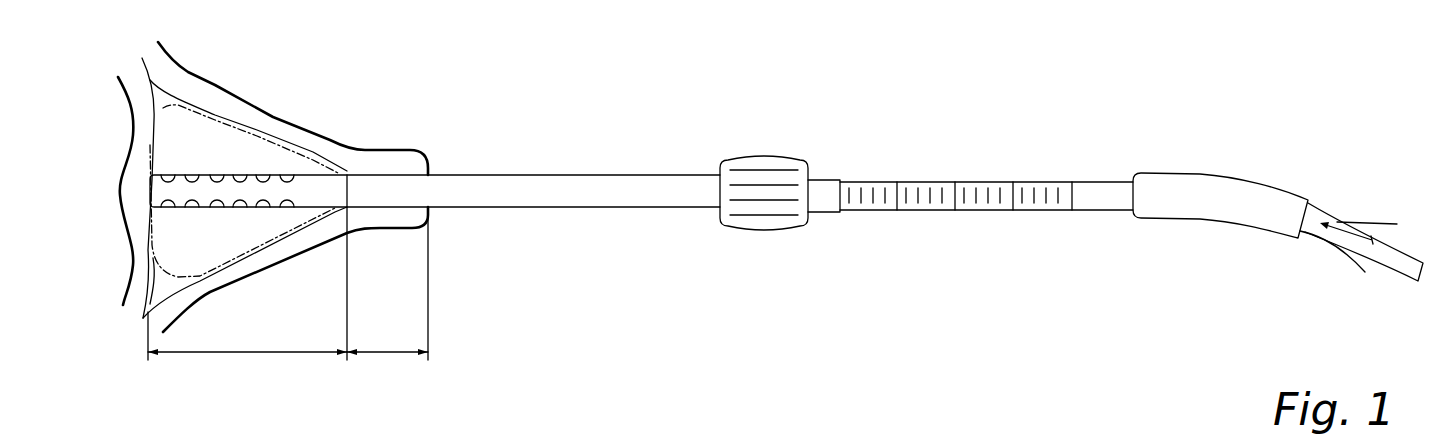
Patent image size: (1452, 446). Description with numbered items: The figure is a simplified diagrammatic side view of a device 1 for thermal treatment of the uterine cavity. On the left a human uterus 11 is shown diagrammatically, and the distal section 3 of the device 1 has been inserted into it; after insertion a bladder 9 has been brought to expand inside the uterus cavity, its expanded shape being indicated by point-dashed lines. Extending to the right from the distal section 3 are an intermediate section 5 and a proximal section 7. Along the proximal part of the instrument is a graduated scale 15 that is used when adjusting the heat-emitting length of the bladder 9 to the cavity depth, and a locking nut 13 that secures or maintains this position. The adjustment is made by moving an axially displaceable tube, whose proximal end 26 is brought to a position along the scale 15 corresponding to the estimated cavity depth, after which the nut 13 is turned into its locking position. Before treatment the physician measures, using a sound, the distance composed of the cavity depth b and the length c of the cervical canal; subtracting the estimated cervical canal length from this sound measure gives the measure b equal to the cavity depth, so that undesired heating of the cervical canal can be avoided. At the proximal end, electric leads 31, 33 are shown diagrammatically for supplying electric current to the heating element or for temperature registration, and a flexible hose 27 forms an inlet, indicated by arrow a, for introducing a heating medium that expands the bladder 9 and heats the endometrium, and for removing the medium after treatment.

The device 1 is at (750, 105).
The distal section 3 is at (233, 188).
The intermediate section 5 is at (633, 190).
The proximal section 7 is at (1223, 178).
The bladder 9 is at (256, 135).
The human uterus 11 is at (292, 242).
The locking nut 13 is at (767, 225).
The scale 15 is at (967, 193).
The proximal end of the displaceable tube 26 is at (822, 200).
The flexible hose 27 is at (1392, 257).
The electric lead 31 is at (1377, 226).
The electric lead 33 is at (1342, 247).
The inlet arrow a is at (1377, 238).
The cavity depth b is at (247, 340).
The length of the cervical canal c is at (387, 341).